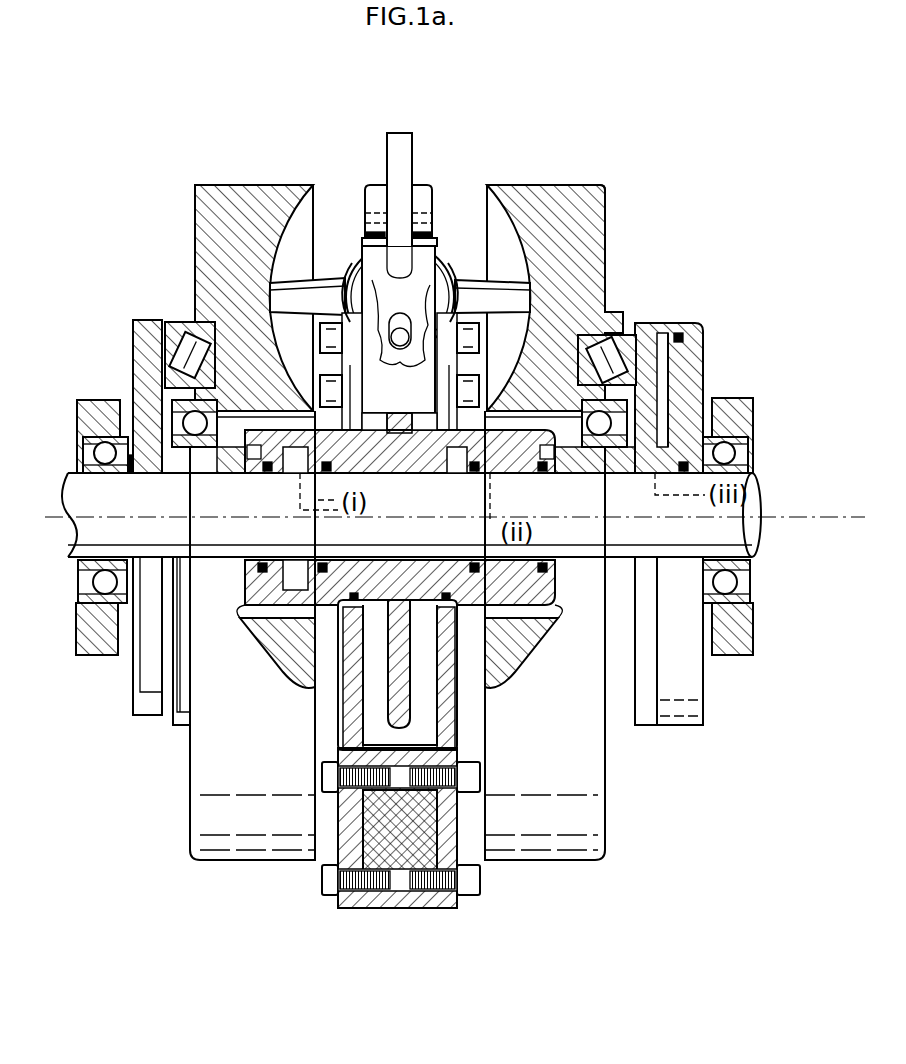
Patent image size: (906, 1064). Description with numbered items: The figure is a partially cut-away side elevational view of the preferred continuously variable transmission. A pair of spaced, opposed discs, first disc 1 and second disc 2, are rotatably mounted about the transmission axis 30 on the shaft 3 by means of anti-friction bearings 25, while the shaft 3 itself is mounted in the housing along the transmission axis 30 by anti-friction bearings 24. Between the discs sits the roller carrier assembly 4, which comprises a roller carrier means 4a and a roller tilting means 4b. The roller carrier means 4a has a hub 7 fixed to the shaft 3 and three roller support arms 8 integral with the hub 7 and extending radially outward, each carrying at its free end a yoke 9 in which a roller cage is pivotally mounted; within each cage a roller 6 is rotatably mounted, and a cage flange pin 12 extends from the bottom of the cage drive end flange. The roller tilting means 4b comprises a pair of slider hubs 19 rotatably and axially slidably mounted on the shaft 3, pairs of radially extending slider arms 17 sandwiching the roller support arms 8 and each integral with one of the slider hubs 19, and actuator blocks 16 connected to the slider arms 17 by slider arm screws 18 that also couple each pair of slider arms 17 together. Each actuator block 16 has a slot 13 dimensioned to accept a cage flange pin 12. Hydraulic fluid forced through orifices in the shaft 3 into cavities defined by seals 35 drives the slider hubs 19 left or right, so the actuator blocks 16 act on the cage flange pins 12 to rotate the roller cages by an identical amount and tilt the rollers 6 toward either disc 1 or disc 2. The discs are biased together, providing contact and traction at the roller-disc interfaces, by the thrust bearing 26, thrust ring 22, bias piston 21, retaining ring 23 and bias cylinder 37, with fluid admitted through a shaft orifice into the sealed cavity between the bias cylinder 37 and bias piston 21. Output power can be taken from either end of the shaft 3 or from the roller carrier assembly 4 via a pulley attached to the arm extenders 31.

The first disc 1 is at (218, 185).
The second disc 2 is at (558, 185).
The shaft 3 is at (748, 476).
The roller carrier assembly 4 is at (425, 160).
The roller carrier means 4a is at (458, 205).
The roller tilting means 4b is at (431, 788).
The roller 6 is at (488, 298).
The hub 7 is at (452, 474).
The roller support arm 8 is at (398, 470).
The yoke 9 is at (372, 188).
The cage flange pin 12 is at (400, 347).
The slot 13 is at (420, 290).
The actuator block 16 is at (378, 284).
The slider arm 17 is at (352, 906).
The slider arm screw 18 is at (435, 906).
The slider hub 19 is at (262, 458).
The bias piston 21 is at (695, 368).
The thrust ring 22 is at (138, 348).
The retaining ring 23 is at (130, 474).
The anti-friction bearing 24 is at (85, 437).
The anti-friction bearing 25 is at (205, 450).
The thrust bearing 26 is at (180, 330).
The transmission axis 30 is at (764, 522).
The arm extender 31 is at (395, 148).
The seal 35 is at (272, 632).
The bias cylinder 37 is at (648, 345).